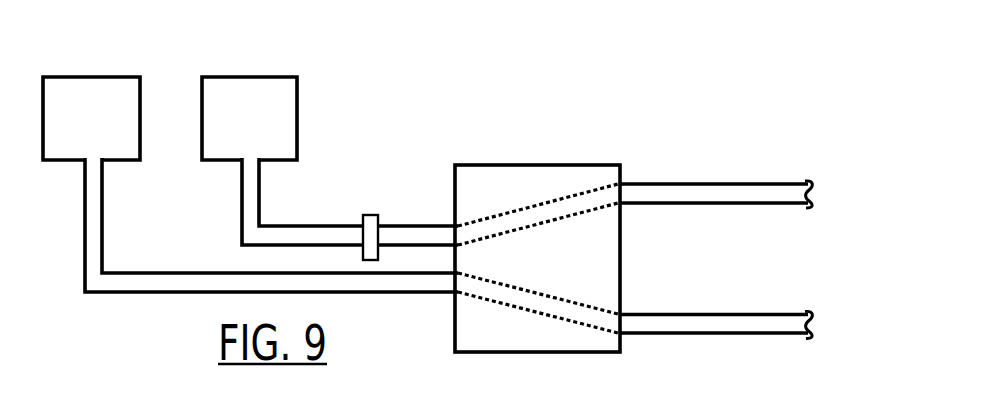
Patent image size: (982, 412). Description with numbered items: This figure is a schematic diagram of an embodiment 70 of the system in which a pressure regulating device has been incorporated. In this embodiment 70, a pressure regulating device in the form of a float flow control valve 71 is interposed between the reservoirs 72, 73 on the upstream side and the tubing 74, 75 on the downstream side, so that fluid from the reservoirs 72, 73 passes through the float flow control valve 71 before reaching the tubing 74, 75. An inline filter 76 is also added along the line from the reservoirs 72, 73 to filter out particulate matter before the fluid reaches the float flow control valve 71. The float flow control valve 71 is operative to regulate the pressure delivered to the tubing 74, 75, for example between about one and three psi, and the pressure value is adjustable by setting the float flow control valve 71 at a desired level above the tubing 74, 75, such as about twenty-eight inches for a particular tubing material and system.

The embodiment 70 is at (696, 96).
The float flow control valve 71 is at (537, 163).
The reservoir 72 is at (104, 131).
The reservoir 73 is at (263, 131).
The tubing 74 is at (712, 192).
The tubing 75 is at (709, 325).
The inline filter 76 is at (372, 214).